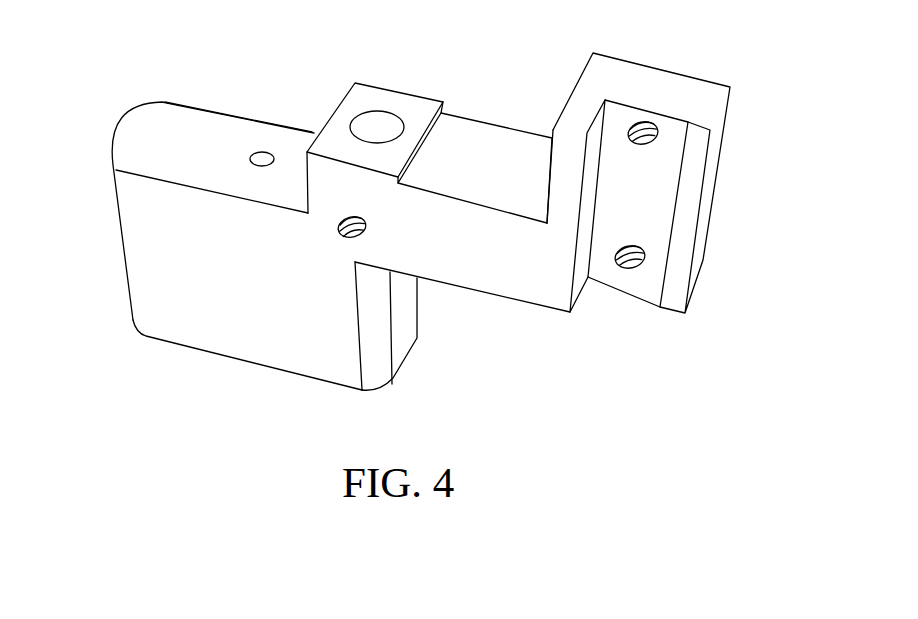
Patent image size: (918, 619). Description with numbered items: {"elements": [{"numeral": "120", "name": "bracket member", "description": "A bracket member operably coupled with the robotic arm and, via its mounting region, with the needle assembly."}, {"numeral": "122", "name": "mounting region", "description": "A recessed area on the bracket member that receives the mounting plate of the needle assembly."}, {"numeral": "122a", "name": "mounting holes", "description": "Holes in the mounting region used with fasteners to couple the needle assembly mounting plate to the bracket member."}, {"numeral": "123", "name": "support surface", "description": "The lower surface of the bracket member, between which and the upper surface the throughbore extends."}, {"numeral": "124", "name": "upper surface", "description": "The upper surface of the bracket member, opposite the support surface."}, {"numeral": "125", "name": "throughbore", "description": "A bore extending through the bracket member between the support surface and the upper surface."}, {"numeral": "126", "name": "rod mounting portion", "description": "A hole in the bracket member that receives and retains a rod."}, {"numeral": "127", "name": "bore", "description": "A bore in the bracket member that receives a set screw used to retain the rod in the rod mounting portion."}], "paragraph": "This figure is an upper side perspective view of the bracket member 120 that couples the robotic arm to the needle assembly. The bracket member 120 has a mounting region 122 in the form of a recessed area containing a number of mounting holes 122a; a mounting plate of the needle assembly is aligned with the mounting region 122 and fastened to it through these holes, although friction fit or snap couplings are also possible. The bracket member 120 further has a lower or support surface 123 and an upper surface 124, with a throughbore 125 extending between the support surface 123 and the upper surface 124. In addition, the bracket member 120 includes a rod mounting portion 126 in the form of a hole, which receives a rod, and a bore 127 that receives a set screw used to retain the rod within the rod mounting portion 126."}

The mounting bracket 120 is at (127, 127).
The mounting plate 122 is at (624, 124).
The fastener 122a is at (660, 137).
The bottom surface 123 is at (264, 362).
The top surface 124 is at (181, 119).
The hole 125 is at (263, 158).
The bore 126 is at (380, 125).
The fastener 127 is at (360, 237).